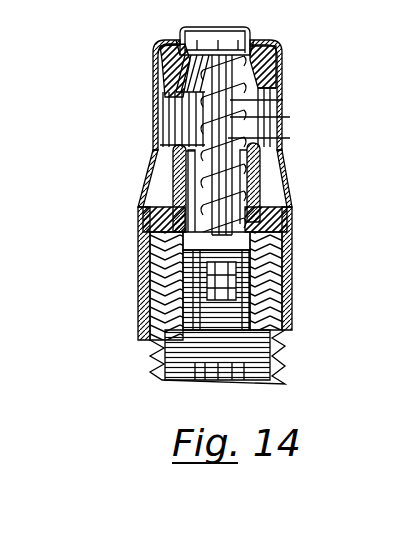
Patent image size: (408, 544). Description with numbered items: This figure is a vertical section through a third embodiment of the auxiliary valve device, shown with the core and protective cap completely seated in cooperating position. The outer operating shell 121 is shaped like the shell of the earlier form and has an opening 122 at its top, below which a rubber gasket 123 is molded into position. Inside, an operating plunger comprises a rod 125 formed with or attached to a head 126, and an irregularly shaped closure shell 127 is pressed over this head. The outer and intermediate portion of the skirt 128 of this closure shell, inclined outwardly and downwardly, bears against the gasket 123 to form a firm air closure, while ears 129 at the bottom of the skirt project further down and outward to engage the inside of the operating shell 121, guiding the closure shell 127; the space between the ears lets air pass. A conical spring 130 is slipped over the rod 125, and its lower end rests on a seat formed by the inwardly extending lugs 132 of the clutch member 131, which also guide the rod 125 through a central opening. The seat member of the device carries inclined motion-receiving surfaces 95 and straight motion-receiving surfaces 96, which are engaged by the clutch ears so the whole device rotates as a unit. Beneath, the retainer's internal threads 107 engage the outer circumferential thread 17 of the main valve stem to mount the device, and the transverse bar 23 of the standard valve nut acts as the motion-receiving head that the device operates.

The outer circumferential thread 17 is at (152, 354).
The transverse bar 23 is at (150, 313).
The inclined motion-receiving surfaces 95 is at (273, 192).
The straight motion-receiving surfaces 96 is at (165, 198).
The internal threads 107 is at (145, 296).
The operating shell 121 is at (150, 128).
The opening 122 is at (177, 38).
The rubber gasket 123 is at (153, 59).
The rod 125 is at (290, 117).
The head 126 is at (219, 36).
The closure shell 127 is at (179, 40).
The skirt 128 is at (162, 92).
The ears 129 is at (262, 104).
The conical spring 130 is at (290, 138).
The clutch member 131 is at (145, 272).
The lugs 132 is at (292, 245).